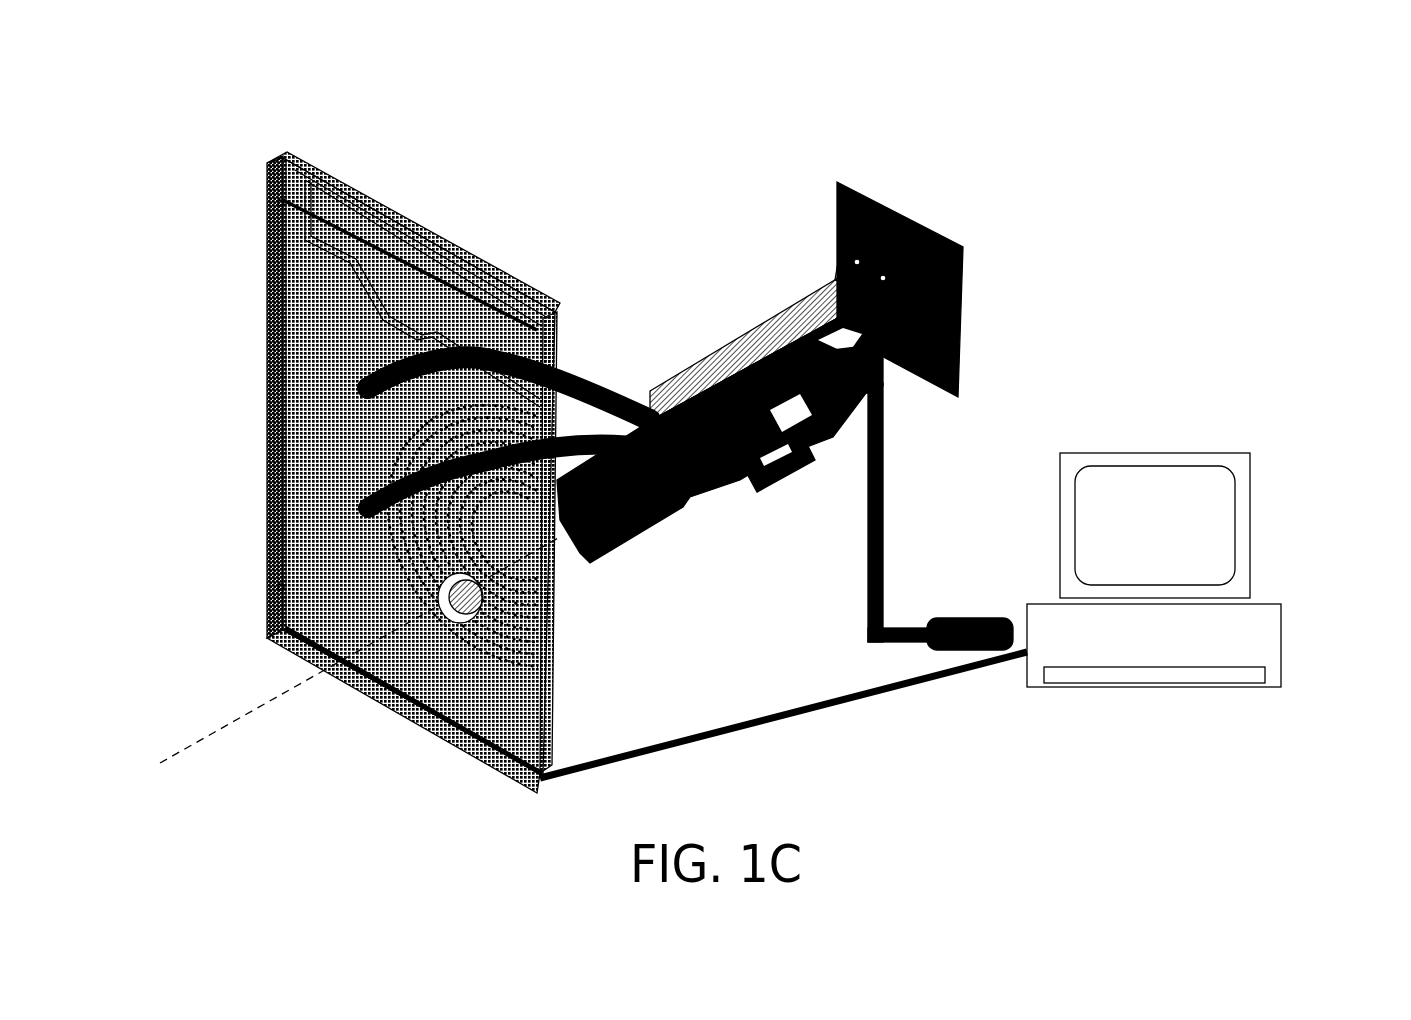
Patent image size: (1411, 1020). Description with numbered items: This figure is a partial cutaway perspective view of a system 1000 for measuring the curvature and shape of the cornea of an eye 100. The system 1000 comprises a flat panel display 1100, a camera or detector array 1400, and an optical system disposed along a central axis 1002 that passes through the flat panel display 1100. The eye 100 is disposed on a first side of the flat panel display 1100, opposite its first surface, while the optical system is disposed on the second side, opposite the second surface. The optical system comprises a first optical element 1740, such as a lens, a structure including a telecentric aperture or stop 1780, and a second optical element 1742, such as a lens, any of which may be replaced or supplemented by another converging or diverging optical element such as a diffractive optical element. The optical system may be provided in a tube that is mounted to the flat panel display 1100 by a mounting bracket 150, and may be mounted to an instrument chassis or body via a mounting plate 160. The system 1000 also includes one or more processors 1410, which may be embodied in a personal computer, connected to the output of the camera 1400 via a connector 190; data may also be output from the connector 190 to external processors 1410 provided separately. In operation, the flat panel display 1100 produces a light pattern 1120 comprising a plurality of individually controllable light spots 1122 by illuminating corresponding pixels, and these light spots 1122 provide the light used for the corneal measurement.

The system 1000 is at (1395, 52).
The flat panel display 1100 is at (243, 187).
The light pattern 1120 is at (392, 456).
The light spots 1122 is at (400, 562).
The central axis 1002 is at (245, 713).
The eye 100 is at (437, 628).
The mounting bracket 150 is at (588, 372).
The first optical element 1740 is at (607, 550).
The second optical element 1742 is at (773, 455).
The telecentric aperture 1780 is at (728, 360).
The camera 1400 is at (886, 190).
The mounting plate 160 is at (965, 335).
The connector 190 is at (967, 596).
The processors 1410 is at (1222, 418).